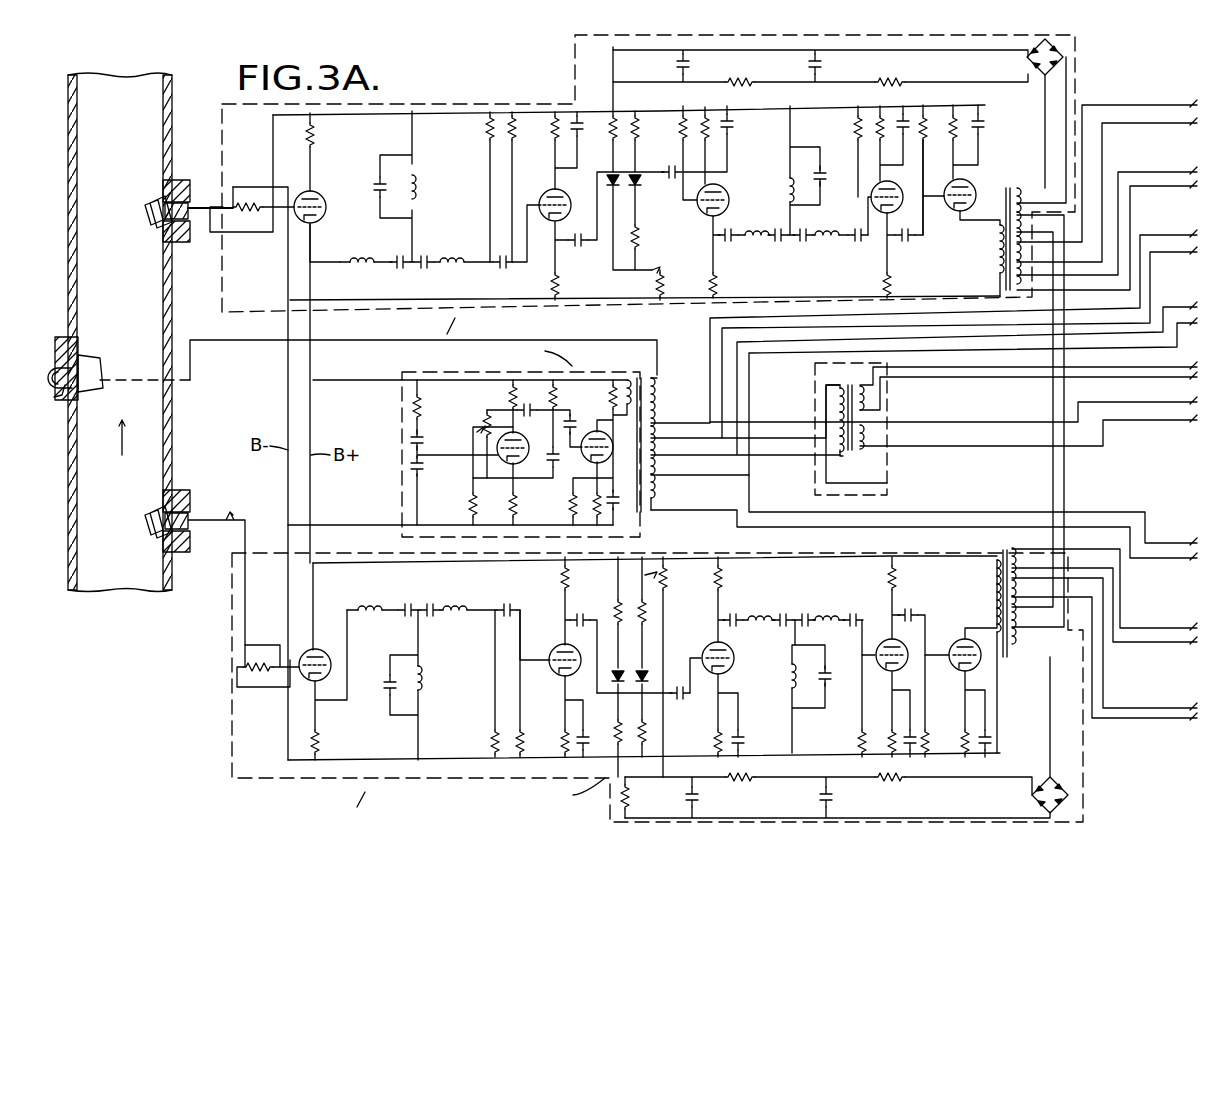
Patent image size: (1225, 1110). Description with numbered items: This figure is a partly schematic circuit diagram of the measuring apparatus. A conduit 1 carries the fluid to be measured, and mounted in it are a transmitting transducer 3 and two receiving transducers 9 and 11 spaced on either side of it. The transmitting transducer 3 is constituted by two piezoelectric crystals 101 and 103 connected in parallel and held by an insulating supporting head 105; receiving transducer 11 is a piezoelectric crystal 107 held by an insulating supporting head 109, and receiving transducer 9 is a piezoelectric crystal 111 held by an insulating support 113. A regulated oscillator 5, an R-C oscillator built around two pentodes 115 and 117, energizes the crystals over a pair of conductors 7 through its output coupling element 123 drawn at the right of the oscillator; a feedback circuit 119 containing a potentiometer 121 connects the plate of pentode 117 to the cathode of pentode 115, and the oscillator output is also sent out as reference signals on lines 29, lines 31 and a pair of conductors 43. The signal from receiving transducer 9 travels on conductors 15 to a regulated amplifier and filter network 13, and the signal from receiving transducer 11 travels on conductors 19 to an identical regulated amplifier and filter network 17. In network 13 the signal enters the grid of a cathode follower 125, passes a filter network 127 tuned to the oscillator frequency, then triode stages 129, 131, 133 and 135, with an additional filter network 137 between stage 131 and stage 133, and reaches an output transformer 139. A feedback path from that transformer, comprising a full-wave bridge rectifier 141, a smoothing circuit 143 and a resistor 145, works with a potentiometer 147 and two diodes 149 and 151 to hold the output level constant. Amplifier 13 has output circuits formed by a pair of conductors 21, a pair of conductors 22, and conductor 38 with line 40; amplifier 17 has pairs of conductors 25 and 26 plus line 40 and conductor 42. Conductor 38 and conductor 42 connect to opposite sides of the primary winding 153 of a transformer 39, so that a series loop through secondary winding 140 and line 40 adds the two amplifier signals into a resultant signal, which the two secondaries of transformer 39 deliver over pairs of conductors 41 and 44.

The conduit 1 is at (179, 96).
The transmitting transducer 3 is at (93, 362).
The regulated oscillator 5 is at (400, 426).
The conductors 7 is at (255, 342).
The receiving transducer 9 is at (175, 500).
The receiving transducer 11 is at (166, 201).
The regulated amplifier and filter network 13 is at (250, 563).
The conductors 15 is at (216, 577).
The regulated amplifier and filter network 17 is at (470, 100).
The conductors 19 is at (208, 208).
The pair of conductors 21 is at (1141, 723).
The pair of conductors 22 is at (1197, 641).
The pair of conductors 25 is at (1180, 120).
The pair of conductors 26 is at (1186, 178).
The lines 29 is at (745, 509).
The lines 31 is at (714, 346).
The conductor 38 is at (1053, 497).
The transformer 39 is at (911, 429).
The line 40 is at (1066, 356).
The pair of conductors 41 is at (1191, 399).
The conductor 42 is at (1049, 360).
The pair of conductors 43 is at (738, 393).
The pair of conductors 44 is at (1193, 365).
The piezoelectric crystal 101 is at (90, 356).
The piezoelectric crystal 103 is at (82, 386).
The insulating supporting head 105 is at (72, 345).
The piezoelectric crystal 107 is at (158, 222).
The insulating supporting head 109 is at (186, 180).
The piezoelectric crystal 111 is at (158, 510).
The insulating support 113 is at (190, 490).
The pentode 115 is at (507, 433).
The pentode 117 is at (598, 432).
The feedback circuit 119 is at (523, 406).
The potentiometer 121 is at (475, 416).
The oscillator transformer 123 is at (639, 476).
The cathode follower 125 is at (330, 656).
The filter network 127 is at (460, 670).
The triode stage 129 is at (554, 625).
The triode stage 131 is at (707, 642).
The triode stage 133 is at (878, 630).
The triode stage 135 is at (958, 640).
The additional filter network 137 is at (768, 665).
The output transformer 139 is at (990, 573).
The secondary winding 140 is at (1031, 557).
The full-wave bridge rectifier 141 is at (1025, 800).
The smoothing circuit 143 is at (773, 812).
The resistor 145 is at (643, 797).
The potentiometer 147 is at (648, 574).
The diode 149 is at (618, 668).
The diode 151 is at (645, 670).
The primary winding 153 is at (838, 438).